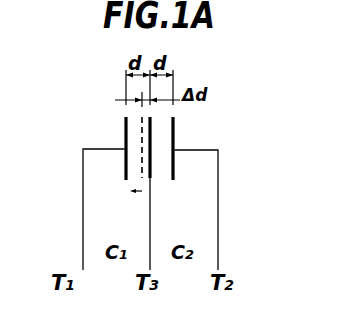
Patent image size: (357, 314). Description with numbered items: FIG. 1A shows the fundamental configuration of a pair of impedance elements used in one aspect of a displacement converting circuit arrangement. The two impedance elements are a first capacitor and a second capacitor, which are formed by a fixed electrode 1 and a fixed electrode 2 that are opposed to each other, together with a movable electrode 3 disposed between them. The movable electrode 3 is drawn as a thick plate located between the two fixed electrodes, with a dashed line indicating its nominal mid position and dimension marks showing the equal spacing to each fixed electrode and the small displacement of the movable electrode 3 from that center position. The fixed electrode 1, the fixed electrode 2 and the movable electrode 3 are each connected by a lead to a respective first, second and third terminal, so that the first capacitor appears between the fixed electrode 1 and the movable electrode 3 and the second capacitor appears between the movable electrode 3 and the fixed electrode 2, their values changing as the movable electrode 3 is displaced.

The fixed electrode 1 is at (125, 127).
The fixed electrode 2 is at (174, 130).
The movable electrode 3 is at (152, 172).